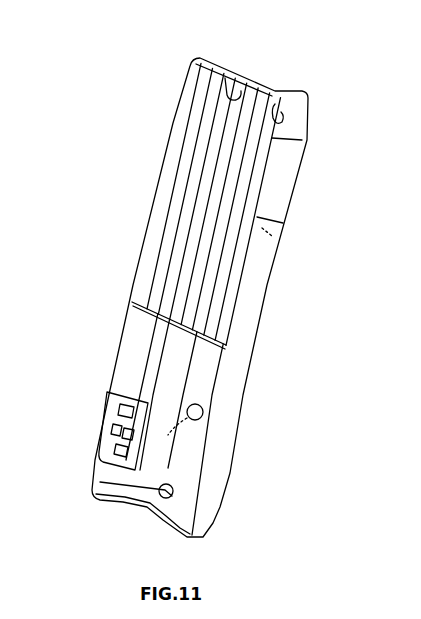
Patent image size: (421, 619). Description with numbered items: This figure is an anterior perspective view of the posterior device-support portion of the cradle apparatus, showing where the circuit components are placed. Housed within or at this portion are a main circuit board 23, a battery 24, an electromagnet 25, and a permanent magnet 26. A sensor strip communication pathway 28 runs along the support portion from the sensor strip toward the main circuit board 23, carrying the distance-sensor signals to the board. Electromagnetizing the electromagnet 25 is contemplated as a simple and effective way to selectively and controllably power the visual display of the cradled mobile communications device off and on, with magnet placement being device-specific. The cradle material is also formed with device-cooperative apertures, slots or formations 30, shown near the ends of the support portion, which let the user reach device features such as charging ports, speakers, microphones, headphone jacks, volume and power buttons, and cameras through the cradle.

The main circuit board 23 is at (112, 437).
The battery 24 is at (176, 368).
The electromagnet 25 is at (200, 415).
The permanent magnet 26 is at (170, 498).
The sensor strip communication pathway 28 is at (262, 238).
The device-cooperative apertures, slots or formations 30 is at (226, 78).